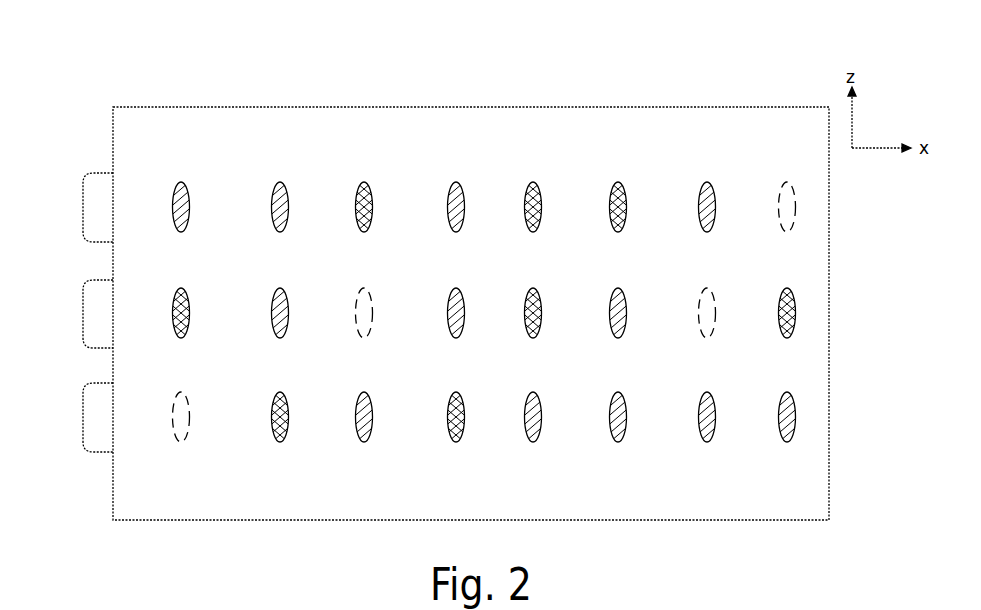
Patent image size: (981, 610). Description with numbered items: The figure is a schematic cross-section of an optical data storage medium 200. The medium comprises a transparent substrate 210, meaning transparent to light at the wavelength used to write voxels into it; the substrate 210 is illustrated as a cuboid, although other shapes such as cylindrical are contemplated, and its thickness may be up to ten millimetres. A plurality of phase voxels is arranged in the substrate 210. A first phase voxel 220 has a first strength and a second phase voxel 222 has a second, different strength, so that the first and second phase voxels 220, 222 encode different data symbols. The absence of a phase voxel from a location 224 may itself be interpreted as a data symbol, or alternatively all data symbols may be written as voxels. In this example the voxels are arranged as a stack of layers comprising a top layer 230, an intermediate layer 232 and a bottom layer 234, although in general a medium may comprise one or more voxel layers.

The optical data storage medium 200 is at (168, 88).
The transparent substrate 210 is at (680, 107).
The first phase voxel 220 is at (179, 183).
The second phase voxel 222 is at (362, 183).
The location 224 is at (784, 183).
The top layer 230 is at (83, 208).
The intermediate layer 232 is at (83, 313).
The bottom layer 234 is at (83, 417).